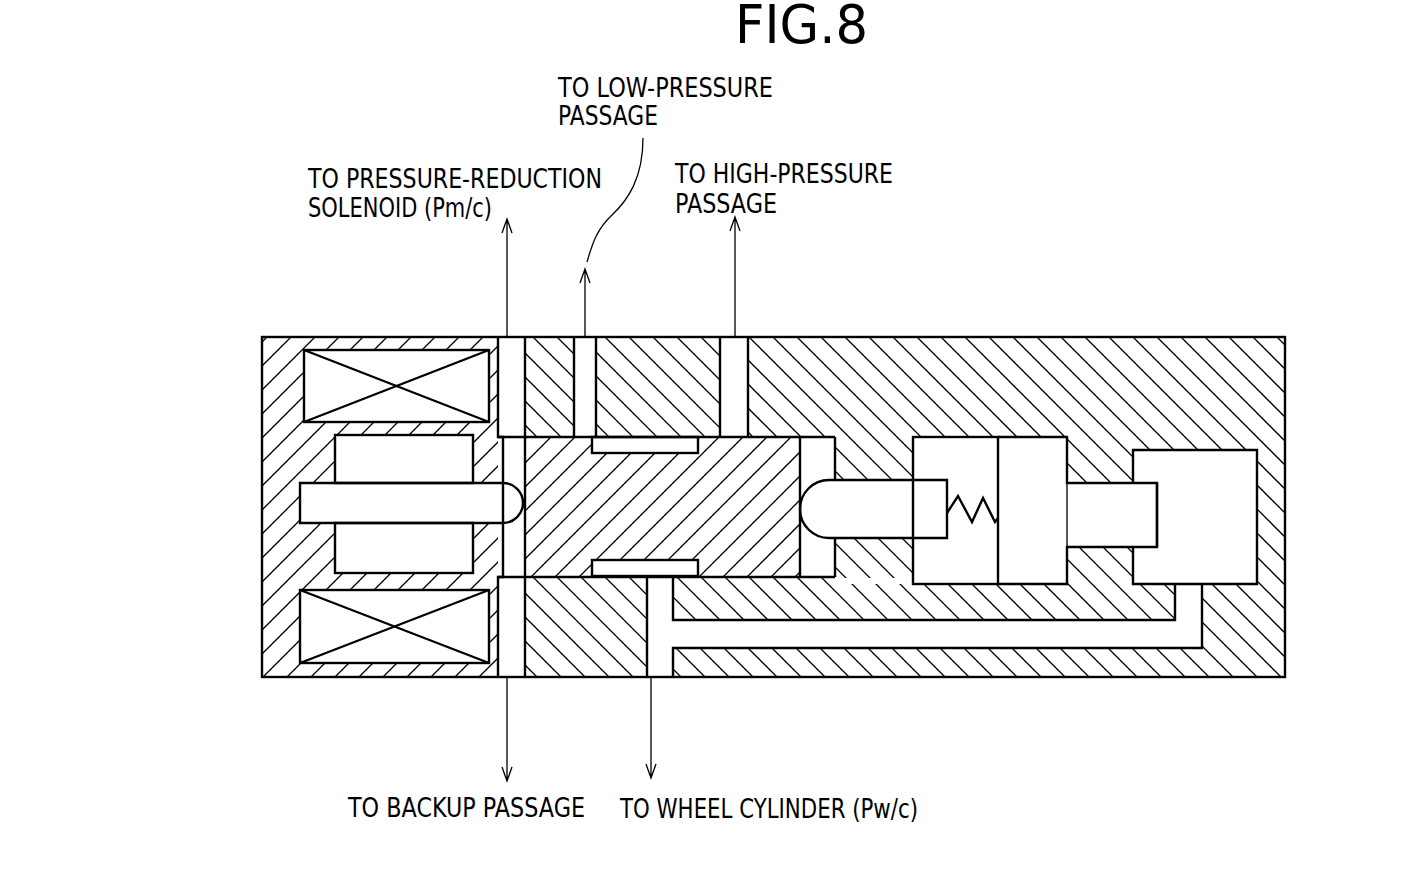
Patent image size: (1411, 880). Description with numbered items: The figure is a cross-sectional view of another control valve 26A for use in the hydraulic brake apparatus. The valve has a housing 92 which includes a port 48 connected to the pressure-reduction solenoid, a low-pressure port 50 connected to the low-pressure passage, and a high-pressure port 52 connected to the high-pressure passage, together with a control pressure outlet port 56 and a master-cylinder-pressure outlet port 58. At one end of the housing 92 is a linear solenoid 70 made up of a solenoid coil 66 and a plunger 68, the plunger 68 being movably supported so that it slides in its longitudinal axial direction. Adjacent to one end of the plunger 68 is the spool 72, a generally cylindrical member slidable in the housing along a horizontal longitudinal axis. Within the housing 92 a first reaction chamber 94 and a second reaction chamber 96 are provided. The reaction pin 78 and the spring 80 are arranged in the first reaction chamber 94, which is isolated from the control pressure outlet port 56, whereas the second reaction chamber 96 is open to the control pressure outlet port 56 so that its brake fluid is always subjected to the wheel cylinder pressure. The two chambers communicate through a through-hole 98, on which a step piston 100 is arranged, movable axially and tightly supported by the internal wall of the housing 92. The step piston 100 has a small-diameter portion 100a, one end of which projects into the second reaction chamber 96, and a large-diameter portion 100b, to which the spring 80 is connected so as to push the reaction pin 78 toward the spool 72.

The control valve 26A is at (907, 331).
The port 48 is at (501, 337).
The low-pressure port 50 is at (590, 337).
The high-pressure port 52 is at (742, 337).
The control pressure outlet port 56 is at (655, 663).
The master-cylinder-pressure outlet port 58 is at (500, 677).
The solenoid coil 66 is at (313, 625).
The plunger 68 is at (300, 505).
The linear solenoid 70 is at (172, 485).
The spool 72 is at (757, 557).
The reaction pin 78 is at (876, 522).
The spring 80 is at (982, 500).
The housing 92 is at (1190, 347).
The first reaction chamber 94 is at (960, 452).
The second reaction chamber 96 is at (1232, 553).
The through-hole 98 is at (1150, 530).
The step piston 100 is at (1070, 530).
The small-diameter portion 100a is at (1140, 510).
The large-diameter portion 100b is at (1037, 457).